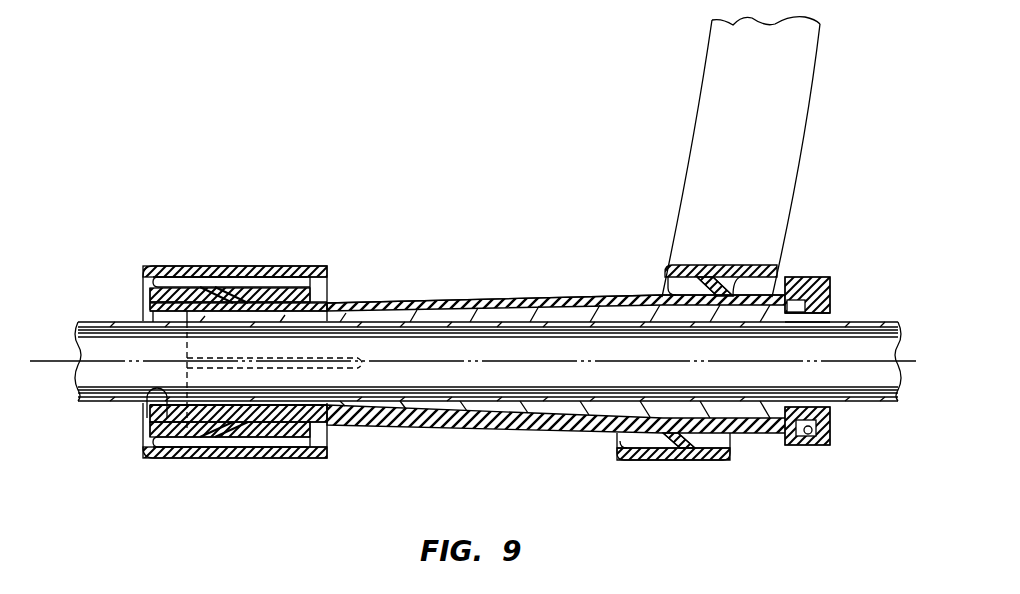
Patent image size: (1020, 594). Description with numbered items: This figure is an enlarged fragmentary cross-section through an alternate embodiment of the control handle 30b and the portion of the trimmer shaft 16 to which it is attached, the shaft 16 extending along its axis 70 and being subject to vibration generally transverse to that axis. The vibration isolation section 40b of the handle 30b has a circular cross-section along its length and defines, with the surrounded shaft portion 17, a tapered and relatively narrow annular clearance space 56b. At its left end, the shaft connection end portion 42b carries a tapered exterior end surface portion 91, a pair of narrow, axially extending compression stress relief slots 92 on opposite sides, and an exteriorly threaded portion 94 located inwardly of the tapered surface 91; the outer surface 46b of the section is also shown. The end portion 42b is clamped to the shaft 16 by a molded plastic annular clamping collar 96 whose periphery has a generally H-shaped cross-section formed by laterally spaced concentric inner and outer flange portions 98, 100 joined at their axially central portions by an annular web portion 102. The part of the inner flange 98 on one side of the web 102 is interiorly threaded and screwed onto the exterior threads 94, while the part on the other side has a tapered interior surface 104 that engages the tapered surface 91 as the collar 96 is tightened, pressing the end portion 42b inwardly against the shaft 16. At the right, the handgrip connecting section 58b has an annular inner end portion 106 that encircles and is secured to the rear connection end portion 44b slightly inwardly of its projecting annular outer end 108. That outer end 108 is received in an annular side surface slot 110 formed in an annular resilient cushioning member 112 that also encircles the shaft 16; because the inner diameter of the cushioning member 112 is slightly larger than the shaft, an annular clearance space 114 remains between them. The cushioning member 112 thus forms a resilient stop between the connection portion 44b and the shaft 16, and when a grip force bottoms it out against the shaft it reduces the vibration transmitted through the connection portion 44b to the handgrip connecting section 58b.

The shaft 16 is at (220, 370).
The shaft portion 17 is at (617, 395).
The handle 30b is at (563, 213).
The vibration isolation section 40b is at (458, 297).
The shaft connection end portion 42b is at (237, 312).
The rear connection end portion 44b is at (742, 436).
The sleeve outer surface 46b is at (487, 302).
The annular clearance space 56b is at (622, 312).
The handgrip connecting section 58b is at (808, 135).
The axis 70 is at (66, 350).
The tapered exterior end surface portion 91 is at (193, 310).
The compression stress relief slots 92 is at (366, 372).
The exteriorly threaded portion 94 is at (310, 306).
The clamping collar 96 is at (233, 463).
The inner flange portion 98 is at (330, 444).
The outer flange portion 100 is at (322, 462).
The annular web portion 102 is at (227, 458).
The tapered interior surface 104 is at (140, 402).
The annular inner end portion 106 is at (680, 463).
The annular outer end portion 108 is at (830, 300).
The annular side surface slot 110 is at (812, 442).
The resilient cushioning member 112 is at (813, 288).
The annular clearance space 114 is at (807, 315).